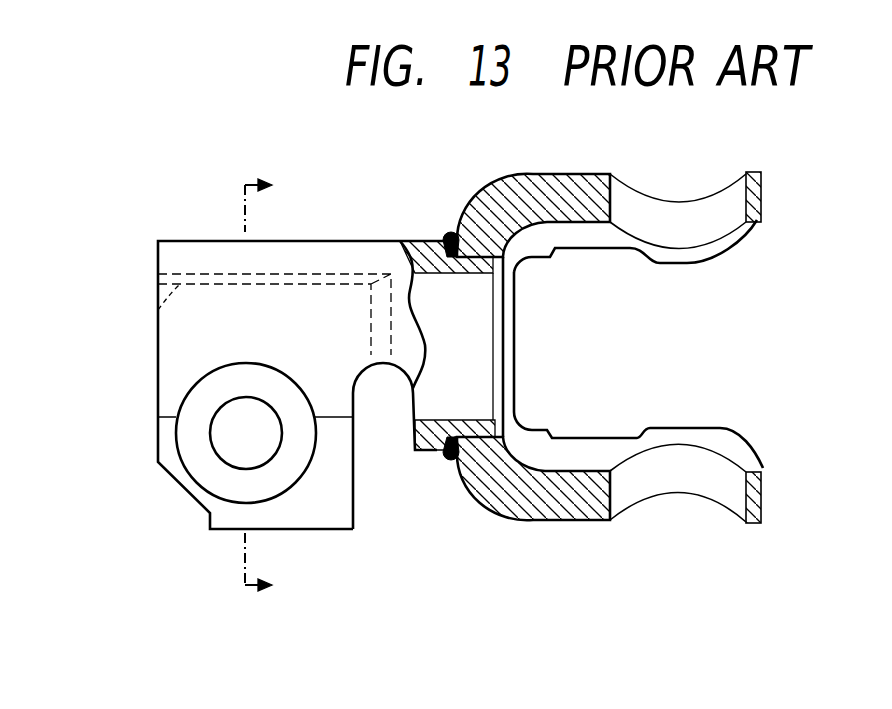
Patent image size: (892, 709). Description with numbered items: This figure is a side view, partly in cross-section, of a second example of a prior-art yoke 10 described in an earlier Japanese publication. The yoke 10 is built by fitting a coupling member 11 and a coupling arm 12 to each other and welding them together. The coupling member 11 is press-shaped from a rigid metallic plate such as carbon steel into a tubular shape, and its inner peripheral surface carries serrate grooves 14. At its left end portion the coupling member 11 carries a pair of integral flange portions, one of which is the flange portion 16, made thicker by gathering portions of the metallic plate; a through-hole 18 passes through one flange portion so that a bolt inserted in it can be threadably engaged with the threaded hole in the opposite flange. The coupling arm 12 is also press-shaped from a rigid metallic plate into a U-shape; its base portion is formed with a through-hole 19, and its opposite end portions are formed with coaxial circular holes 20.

The yoke 10 is at (203, 218).
The coupling member 11 is at (341, 240).
The coupling arm 12 is at (547, 178).
The serrate grooves 14 is at (122, 307).
The flange portion 16 is at (350, 502).
The through-hole 18 is at (228, 452).
The through-hole 19 is at (463, 427).
The circular holes 20 is at (665, 205).